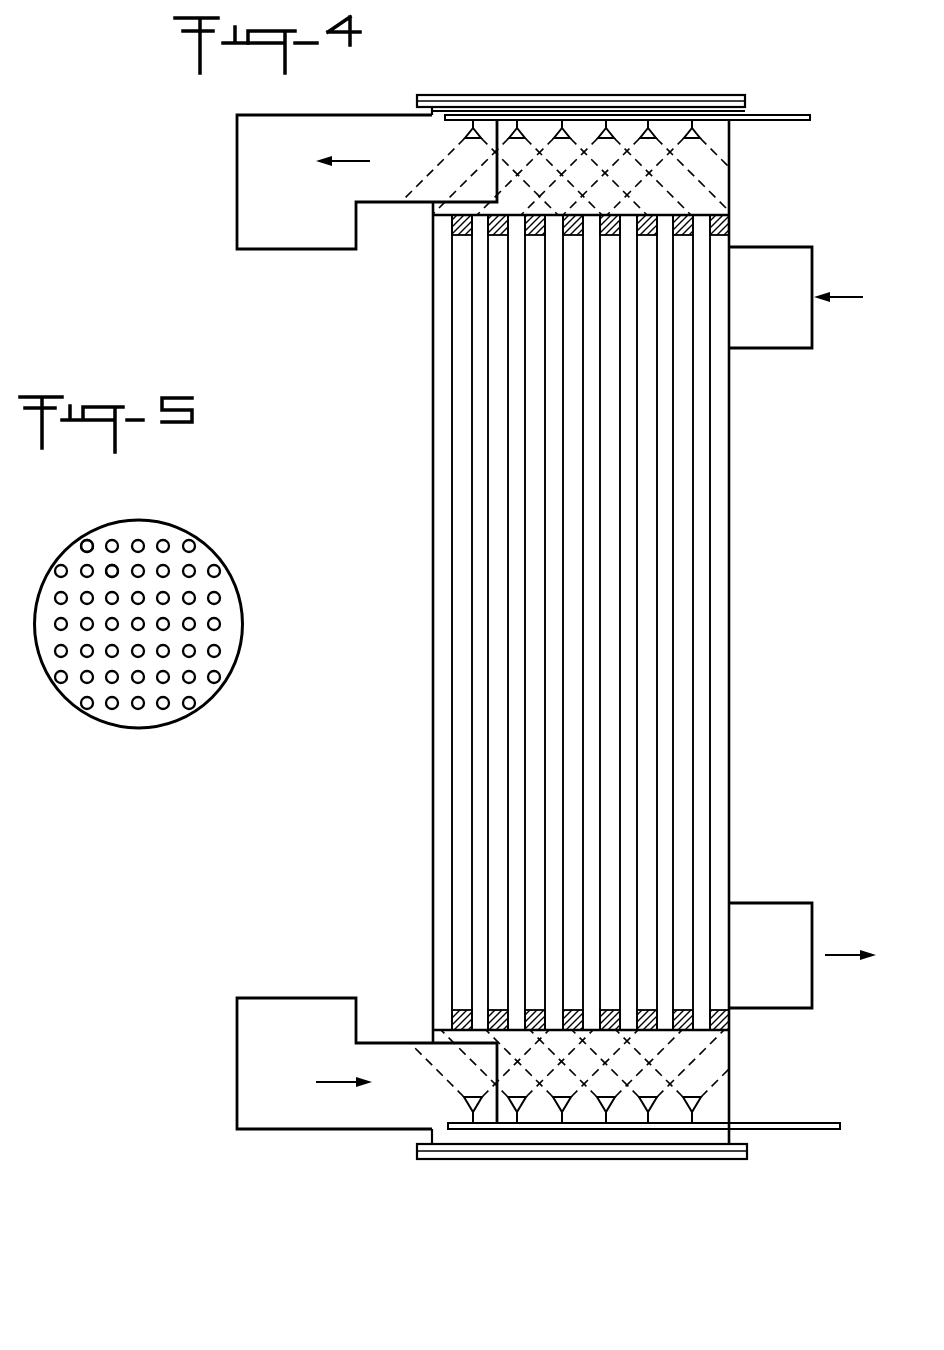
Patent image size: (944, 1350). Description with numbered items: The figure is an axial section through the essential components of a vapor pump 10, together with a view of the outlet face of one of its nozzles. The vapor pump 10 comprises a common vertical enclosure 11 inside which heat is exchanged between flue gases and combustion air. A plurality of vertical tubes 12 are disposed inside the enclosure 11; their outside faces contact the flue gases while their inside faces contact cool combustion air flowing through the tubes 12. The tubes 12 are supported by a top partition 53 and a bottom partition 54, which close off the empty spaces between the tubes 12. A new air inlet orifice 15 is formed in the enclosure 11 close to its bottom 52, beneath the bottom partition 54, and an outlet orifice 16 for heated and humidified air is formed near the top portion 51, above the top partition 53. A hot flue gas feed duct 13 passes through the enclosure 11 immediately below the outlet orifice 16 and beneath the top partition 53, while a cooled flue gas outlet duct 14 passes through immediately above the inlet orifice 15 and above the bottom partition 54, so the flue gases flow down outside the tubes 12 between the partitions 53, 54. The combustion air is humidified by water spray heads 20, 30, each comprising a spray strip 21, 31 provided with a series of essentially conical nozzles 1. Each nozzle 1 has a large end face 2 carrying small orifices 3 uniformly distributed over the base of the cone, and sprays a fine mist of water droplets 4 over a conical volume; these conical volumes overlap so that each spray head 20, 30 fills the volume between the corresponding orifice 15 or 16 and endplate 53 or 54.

In FIG. 4, the nozzle 1 is at (613, 124).
In FIG. 5, the nozzle 1 is at (180, 520).
In FIG. 5, the large end face 2 is at (221, 612).
In FIG. 5, the small orifices 3 is at (108, 567).
In FIG. 4, the water droplets 4 is at (707, 198).
In FIG. 4, the vapor pump 10 is at (601, 632).
In FIG. 4, the enclosure 11 is at (732, 516).
In FIG. 4, the tubes 12 is at (520, 790).
In FIG. 4, the hot flue gas feed duct 13 is at (812, 273).
In FIG. 4, the cooled flue gas outlet duct 14 is at (815, 916).
In FIG. 4, the new air inlet orifice 15 is at (389, 1041).
In FIG. 4, the outlet orifice 16 is at (392, 205).
In FIG. 4, the water spray head 20 is at (704, 109).
In FIG. 4, the spray strip 21 is at (794, 112).
In FIG. 4, the water spray head 30 is at (538, 1112).
In FIG. 4, the spray strip 31 is at (815, 1122).
In FIG. 4, the top portion 51 is at (745, 101).
In FIG. 4, the bottom 52 is at (733, 1161).
In FIG. 4, the top partition 53 is at (733, 222).
In FIG. 4, the bottom partition 54 is at (732, 1021).